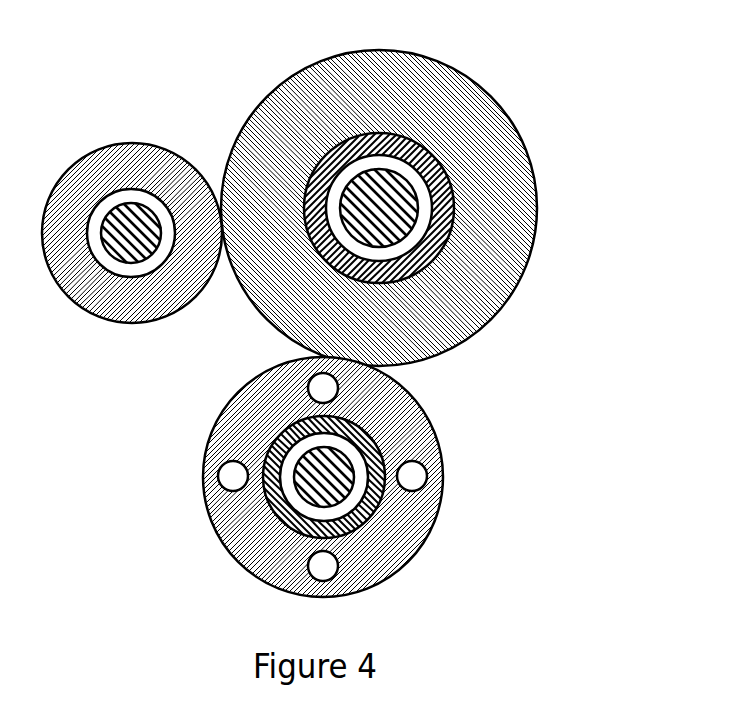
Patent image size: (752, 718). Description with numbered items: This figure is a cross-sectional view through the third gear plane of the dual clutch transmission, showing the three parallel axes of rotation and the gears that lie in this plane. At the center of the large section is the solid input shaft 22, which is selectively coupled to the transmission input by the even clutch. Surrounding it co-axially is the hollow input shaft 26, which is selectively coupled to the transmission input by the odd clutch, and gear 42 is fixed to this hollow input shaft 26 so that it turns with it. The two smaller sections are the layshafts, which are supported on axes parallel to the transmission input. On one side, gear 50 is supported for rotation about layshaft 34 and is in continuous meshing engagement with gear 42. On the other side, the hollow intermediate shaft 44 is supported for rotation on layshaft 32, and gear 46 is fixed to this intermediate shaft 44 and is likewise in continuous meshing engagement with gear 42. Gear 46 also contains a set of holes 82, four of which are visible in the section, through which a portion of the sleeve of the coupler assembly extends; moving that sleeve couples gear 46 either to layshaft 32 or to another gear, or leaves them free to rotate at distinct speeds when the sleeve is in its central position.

The solid input shaft 22 is at (400, 229).
The hollow input shaft 26 is at (443, 167).
The layshaft 32 is at (297, 495).
The layshaft 34 is at (104, 216).
The gear 42 is at (267, 97).
The hollow intermediate shaft 44 is at (353, 530).
The gear 46 is at (443, 497).
The gear 50 is at (185, 158).
The holes 82 is at (219, 474).